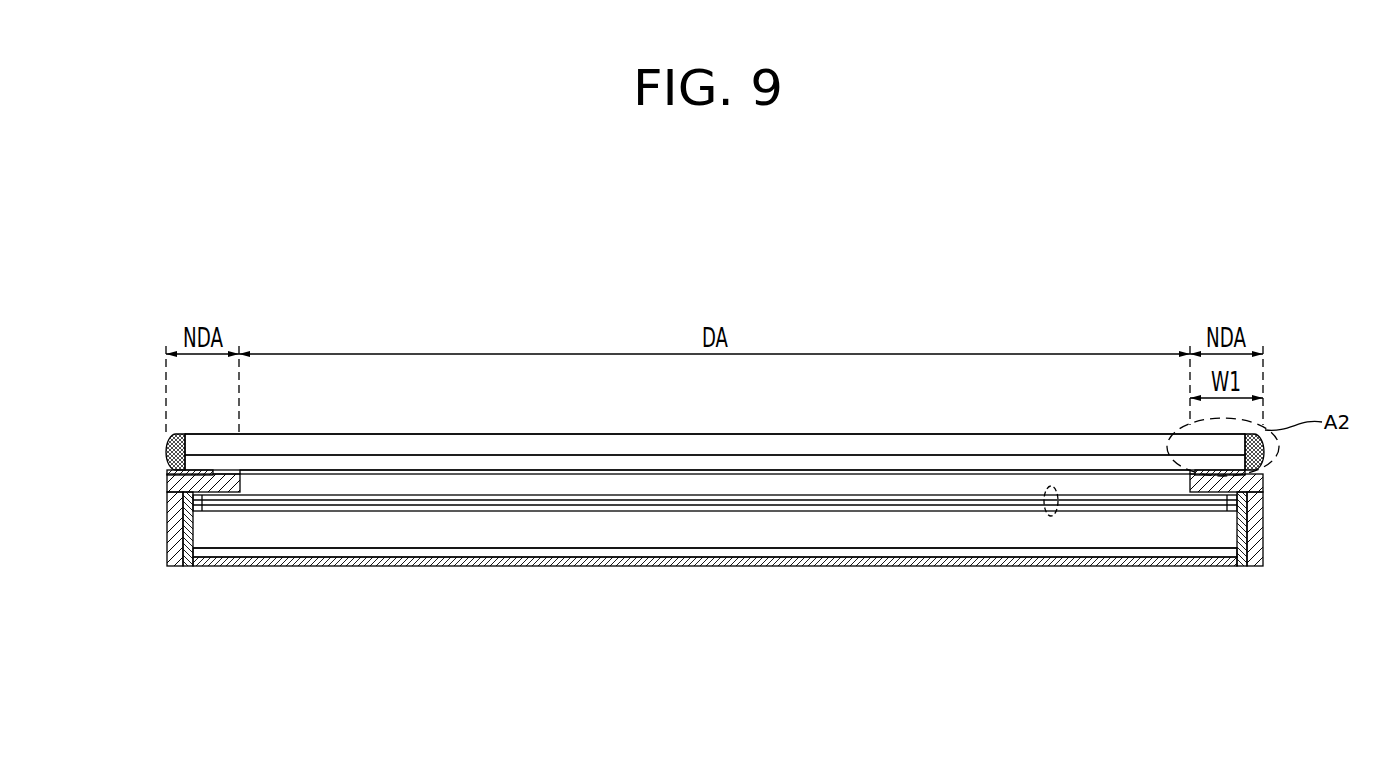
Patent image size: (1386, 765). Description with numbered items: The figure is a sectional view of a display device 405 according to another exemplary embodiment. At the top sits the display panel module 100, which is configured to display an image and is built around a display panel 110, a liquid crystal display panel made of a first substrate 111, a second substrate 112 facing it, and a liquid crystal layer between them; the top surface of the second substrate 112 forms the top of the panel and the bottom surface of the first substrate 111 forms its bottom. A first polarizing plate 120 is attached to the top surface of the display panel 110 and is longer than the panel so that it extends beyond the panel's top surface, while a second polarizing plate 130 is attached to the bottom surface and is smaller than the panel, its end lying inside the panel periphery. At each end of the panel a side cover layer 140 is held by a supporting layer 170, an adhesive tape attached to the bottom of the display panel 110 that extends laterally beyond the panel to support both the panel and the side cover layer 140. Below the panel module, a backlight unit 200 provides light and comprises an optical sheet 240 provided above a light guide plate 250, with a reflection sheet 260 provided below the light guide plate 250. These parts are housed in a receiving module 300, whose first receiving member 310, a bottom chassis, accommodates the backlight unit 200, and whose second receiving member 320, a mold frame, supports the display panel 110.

The display panel module 100 is at (715, 582).
The display panel 110 is at (715, 559).
The first substrate 111 is at (622, 465).
The second substrate 112 is at (693, 448).
The first polarizing plate 120 is at (754, 435).
The second polarizing plate 130 is at (776, 686).
The side cover layer 140 is at (1257, 452).
The supporting layer 170 is at (166, 474).
The backlight unit 200 is at (715, 585).
The optical sheet 240 is at (1049, 516).
The light guide plate 250 is at (992, 538).
The reflection sheet 260 is at (1070, 640).
The receiving module 300 is at (715, 579).
The first receiving member 310 is at (175, 641).
The second receiving member 320 is at (173, 563).
The display device 405 is at (1153, 286).